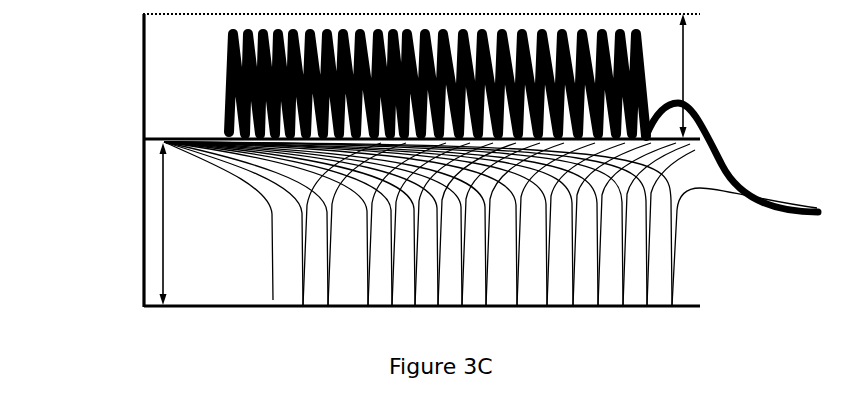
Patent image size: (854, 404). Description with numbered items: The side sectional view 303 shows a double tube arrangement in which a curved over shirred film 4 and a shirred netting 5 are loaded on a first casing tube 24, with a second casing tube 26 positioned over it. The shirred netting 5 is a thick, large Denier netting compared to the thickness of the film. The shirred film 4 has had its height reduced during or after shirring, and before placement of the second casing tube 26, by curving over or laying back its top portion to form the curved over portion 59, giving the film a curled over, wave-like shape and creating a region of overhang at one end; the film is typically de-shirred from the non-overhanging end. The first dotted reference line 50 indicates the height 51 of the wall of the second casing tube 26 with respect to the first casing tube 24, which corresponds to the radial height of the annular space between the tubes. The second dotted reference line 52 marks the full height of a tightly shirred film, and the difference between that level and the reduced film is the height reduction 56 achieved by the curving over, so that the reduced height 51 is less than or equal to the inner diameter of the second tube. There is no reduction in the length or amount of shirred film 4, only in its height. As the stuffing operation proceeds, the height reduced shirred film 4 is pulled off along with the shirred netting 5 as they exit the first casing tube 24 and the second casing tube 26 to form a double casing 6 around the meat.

The side sectional view of double tube arrangement 303 is at (132, 38).
The second casing tube 26 is at (134, 131).
The first casing tube 24 is at (134, 297).
The shirred netting 5 is at (215, 102).
The curved over portion 59 is at (216, 179).
The shirred film 4 is at (256, 256).
The double casing 6 is at (813, 184).
The first dotted reference line 50 is at (732, 157).
The height 51 is at (178, 224).
The height reduction 56 is at (694, 79).
The second dotted reference line 52 is at (716, 25).